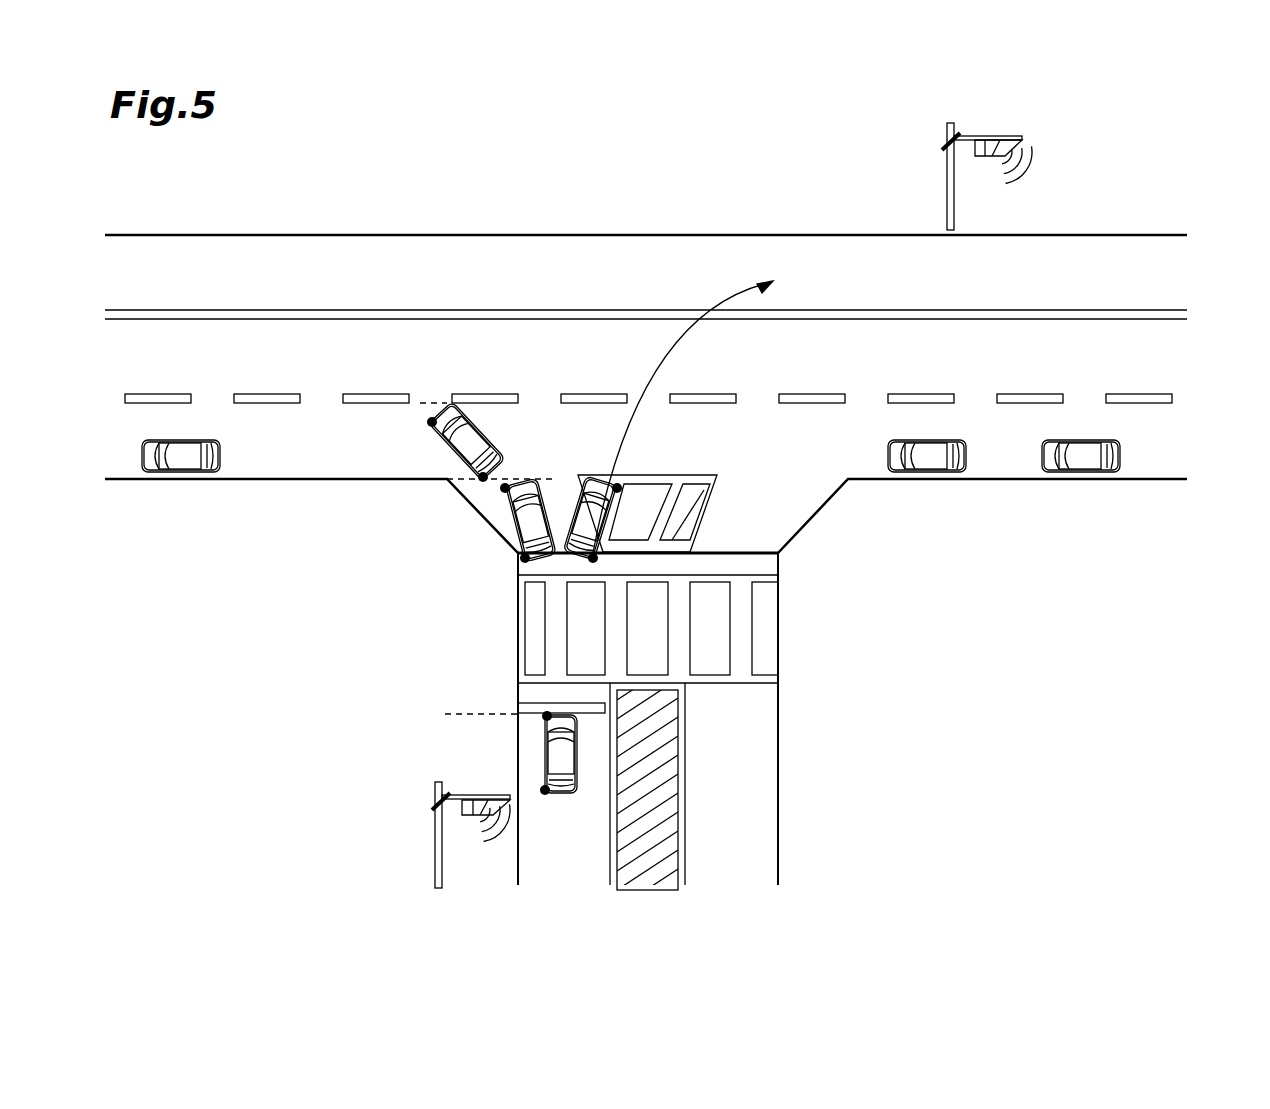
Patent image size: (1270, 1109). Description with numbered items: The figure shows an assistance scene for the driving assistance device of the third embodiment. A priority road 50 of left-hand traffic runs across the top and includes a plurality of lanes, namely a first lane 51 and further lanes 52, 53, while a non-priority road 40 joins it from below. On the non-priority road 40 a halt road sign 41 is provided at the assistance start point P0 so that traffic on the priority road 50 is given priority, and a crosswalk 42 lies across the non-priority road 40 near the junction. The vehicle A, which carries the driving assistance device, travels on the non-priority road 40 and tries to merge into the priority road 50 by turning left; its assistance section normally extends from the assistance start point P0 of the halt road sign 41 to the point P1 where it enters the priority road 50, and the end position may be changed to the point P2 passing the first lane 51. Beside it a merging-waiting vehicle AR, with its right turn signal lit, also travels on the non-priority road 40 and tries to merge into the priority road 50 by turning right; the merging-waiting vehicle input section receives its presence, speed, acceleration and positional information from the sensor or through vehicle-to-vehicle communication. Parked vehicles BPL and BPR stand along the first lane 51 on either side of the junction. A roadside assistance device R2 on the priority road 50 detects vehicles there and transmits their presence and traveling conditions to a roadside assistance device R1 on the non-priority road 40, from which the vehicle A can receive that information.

The priority road 50 is at (1120, 234).
The first lane 51 is at (1147, 440).
The lane 52 is at (1147, 361).
The lane 53 is at (1147, 277).
The non-priority road 40 is at (780, 832).
The halt road sign 41 is at (603, 714).
The crosswalk 42 is at (740, 674).
The roadside assistance device R1 is at (434, 830).
The roadside assistance device R2 is at (945, 172).
The vehicle A is at (540, 512).
The merging-waiting vehicle AR is at (578, 507).
The assistance start point P0 is at (468, 712).
The point entering the priority road P1 is at (482, 481).
The point passing the first lane P2 is at (423, 405).
The parked vehicle BPL is at (190, 476).
The parked vehicles BPR is at (933, 474).